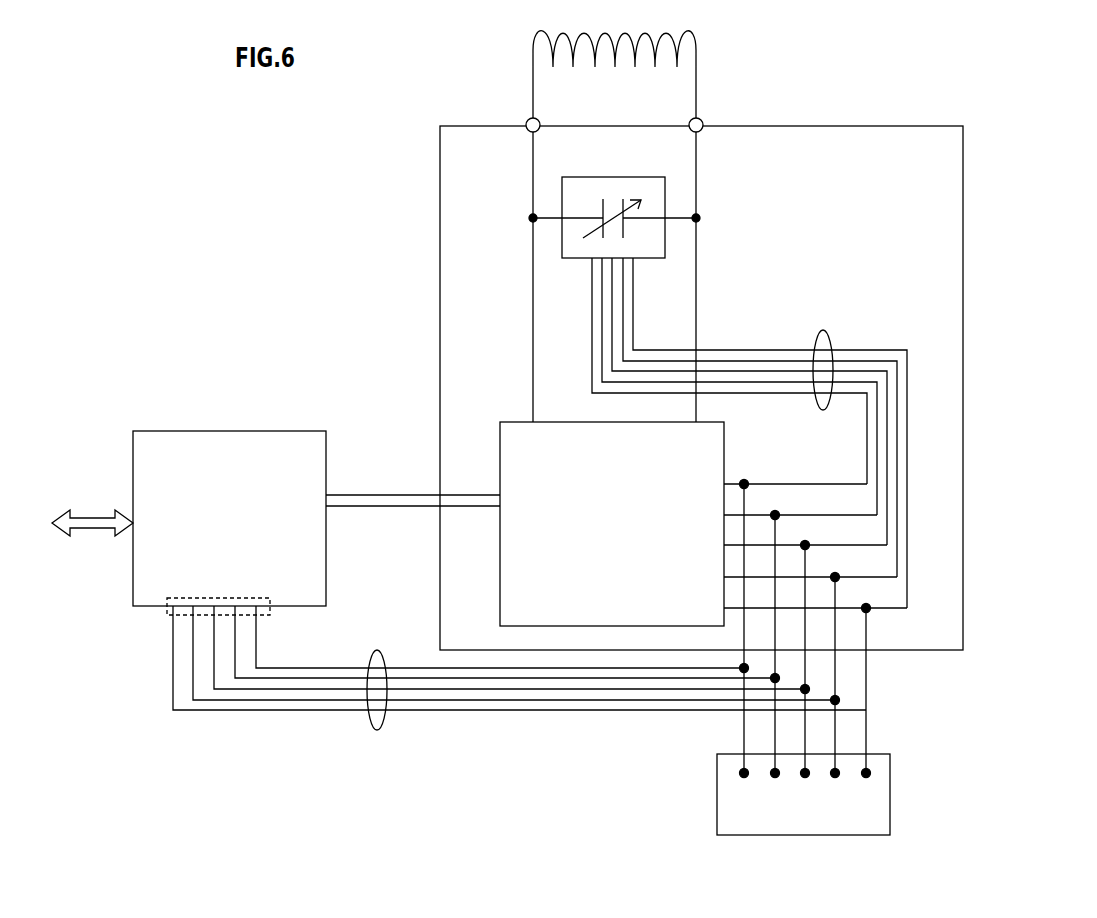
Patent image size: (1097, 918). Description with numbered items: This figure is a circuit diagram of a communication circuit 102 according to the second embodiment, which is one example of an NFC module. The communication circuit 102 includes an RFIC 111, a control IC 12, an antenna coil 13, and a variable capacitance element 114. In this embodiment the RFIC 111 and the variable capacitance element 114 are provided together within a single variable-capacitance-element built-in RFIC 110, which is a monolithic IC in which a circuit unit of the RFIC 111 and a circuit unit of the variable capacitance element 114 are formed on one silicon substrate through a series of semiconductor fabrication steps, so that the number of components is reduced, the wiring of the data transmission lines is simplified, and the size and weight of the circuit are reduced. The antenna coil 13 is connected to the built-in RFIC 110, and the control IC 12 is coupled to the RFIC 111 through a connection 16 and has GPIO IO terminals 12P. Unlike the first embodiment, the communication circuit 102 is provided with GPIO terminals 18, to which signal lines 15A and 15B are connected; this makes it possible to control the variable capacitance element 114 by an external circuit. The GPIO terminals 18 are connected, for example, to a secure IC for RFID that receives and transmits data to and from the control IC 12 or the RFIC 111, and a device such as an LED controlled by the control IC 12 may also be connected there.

The communication circuit 102 is at (1078, 45).
The variable-capacitance-element built-in RFIC 110 is at (963, 127).
The antenna coil 13 is at (700, 43).
The variable capacitance element 114 is at (612, 177).
The signal line 15B is at (825, 331).
The RFIC 111 is at (727, 422).
The GPIO terminals 18 is at (890, 783).
The signal line 15A is at (378, 650).
The control IC 12 is at (232, 431).
The IO terminals 12P is at (166, 612).
The signal line between control IC and RFIC 16 is at (388, 493).